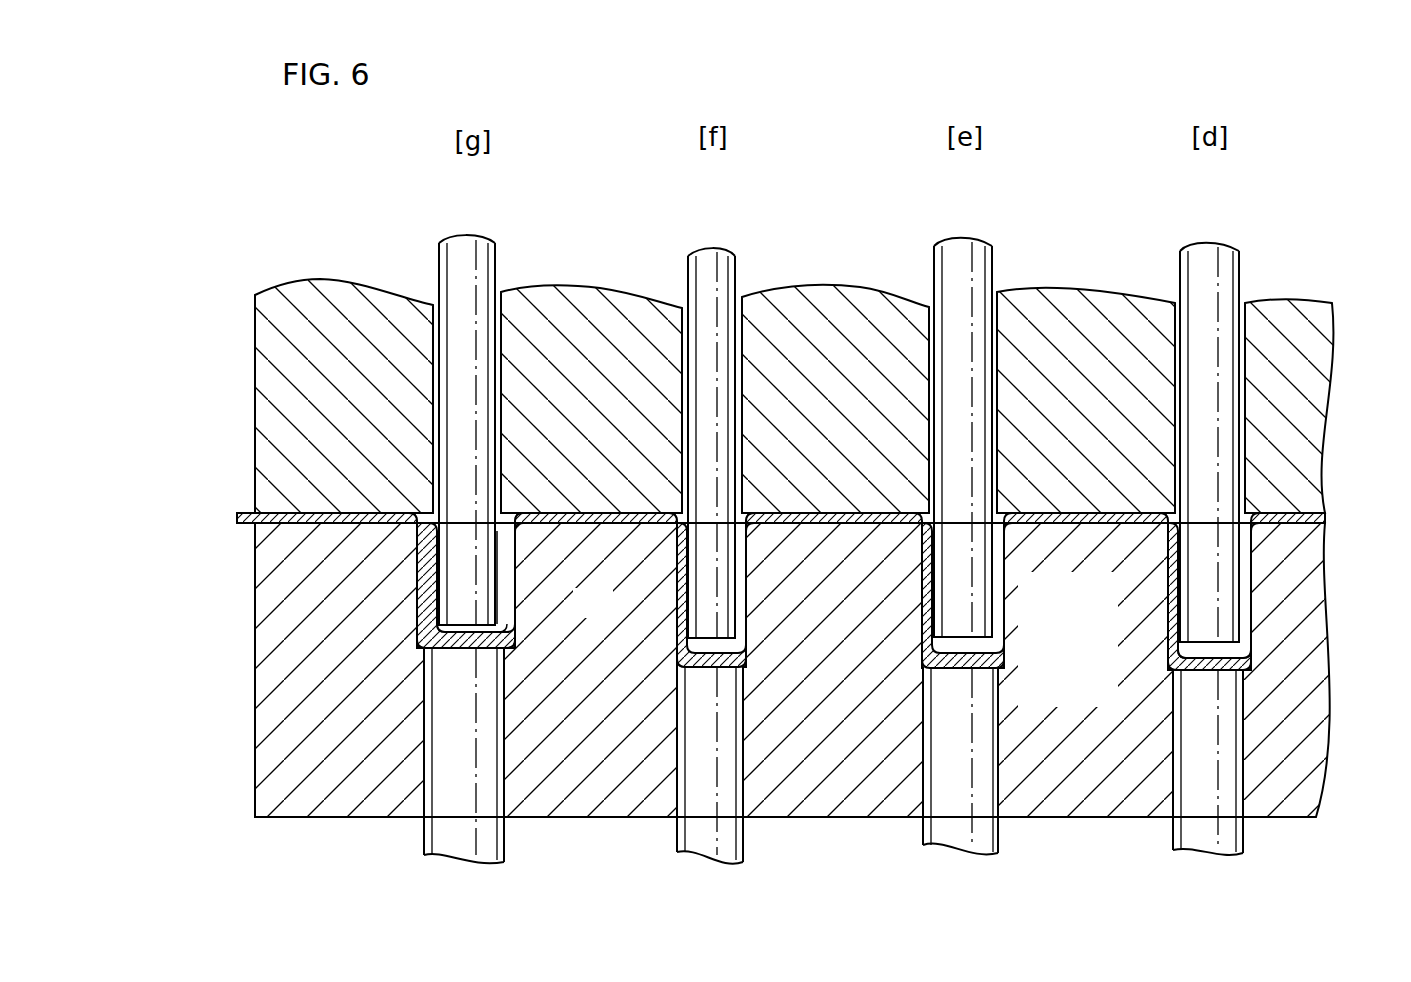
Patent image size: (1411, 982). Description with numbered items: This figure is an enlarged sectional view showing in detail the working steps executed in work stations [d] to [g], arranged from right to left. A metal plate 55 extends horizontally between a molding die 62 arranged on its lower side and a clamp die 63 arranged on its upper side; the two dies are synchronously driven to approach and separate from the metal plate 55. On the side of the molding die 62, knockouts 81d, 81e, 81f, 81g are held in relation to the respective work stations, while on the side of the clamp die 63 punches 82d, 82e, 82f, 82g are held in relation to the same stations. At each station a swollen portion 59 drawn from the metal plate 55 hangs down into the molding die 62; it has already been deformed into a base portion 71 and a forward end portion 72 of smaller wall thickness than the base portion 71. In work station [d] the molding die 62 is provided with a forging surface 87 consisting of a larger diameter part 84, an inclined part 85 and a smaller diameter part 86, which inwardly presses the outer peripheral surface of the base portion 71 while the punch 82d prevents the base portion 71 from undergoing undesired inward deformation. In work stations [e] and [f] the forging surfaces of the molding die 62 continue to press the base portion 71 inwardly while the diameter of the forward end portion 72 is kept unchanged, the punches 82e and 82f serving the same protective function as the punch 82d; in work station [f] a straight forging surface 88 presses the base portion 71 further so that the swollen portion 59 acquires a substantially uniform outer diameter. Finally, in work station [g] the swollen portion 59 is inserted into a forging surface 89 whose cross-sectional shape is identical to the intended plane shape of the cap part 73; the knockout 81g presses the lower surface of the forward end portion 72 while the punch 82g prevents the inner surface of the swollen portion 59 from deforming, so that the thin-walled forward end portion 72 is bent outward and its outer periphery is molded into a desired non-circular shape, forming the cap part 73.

The metal plate 55 is at (245, 510).
The swollen portion 59 is at (783, 600).
The molding die 62 is at (1305, 797).
The clamp die 63 is at (1312, 310).
The base portion 71 is at (415, 598).
The forward end portion 72 is at (1252, 638).
The cap part 73 is at (430, 640).
The knockout 81g is at (493, 833).
The knockout 81f is at (732, 835).
The knockout 81e is at (985, 835).
The knockout 81d is at (1235, 830).
The punch 82g is at (490, 244).
The punch 82f is at (728, 256).
The punch 82e is at (985, 250).
The punch 82d is at (1232, 255).
The larger diameter part 84 is at (1163, 598).
The inclined part 85 is at (1167, 632).
The smaller diameter part 86 is at (1159, 676).
The forging surface 87 is at (1132, 607).
The straight forging surface 88 is at (677, 608).
The forging surface 89 is at (415, 575).